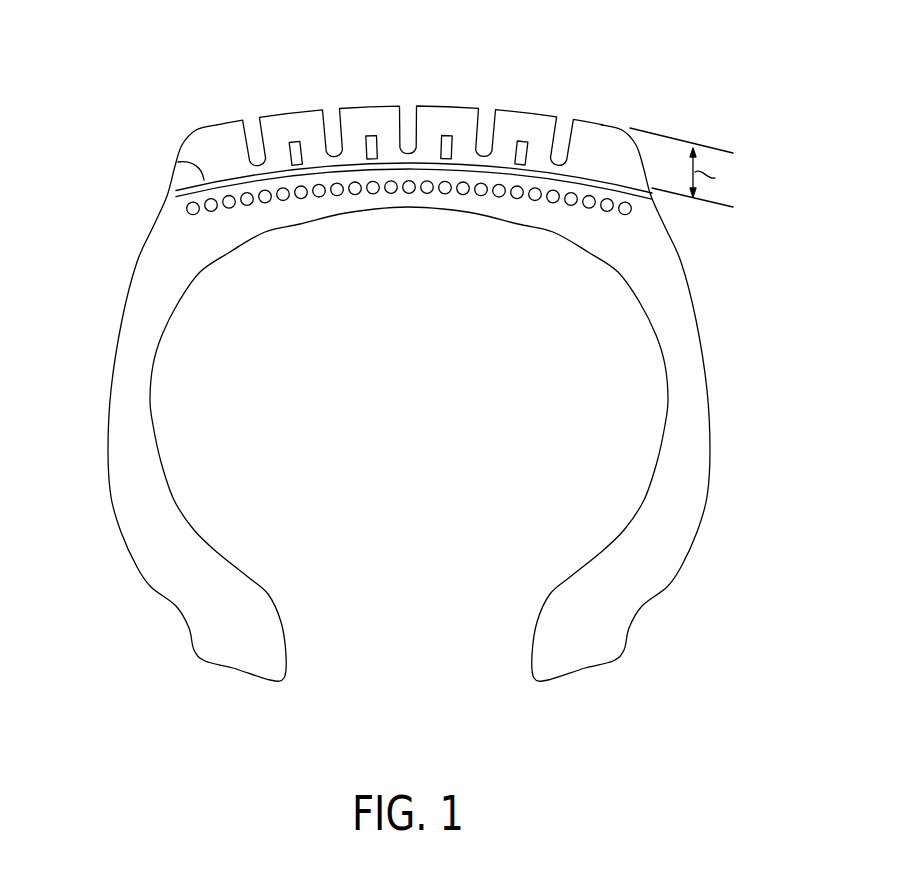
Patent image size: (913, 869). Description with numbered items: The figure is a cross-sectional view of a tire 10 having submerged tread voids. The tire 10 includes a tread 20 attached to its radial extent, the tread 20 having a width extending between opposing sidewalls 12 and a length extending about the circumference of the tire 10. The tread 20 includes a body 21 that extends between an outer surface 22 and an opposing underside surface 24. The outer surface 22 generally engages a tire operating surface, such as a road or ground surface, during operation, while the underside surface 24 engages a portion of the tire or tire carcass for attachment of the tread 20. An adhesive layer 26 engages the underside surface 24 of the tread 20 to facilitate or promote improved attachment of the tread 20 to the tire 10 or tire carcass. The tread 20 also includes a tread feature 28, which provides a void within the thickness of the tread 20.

The tire 10 is at (81, 128).
The sidewalls 12 is at (107, 450).
The tread 20 is at (590, 118).
The body 21 is at (616, 146).
The outer surface 22 is at (220, 123).
The underside surface 24 is at (178, 162).
The adhesive layer 26 is at (183, 203).
The tread feature 28 is at (290, 141).